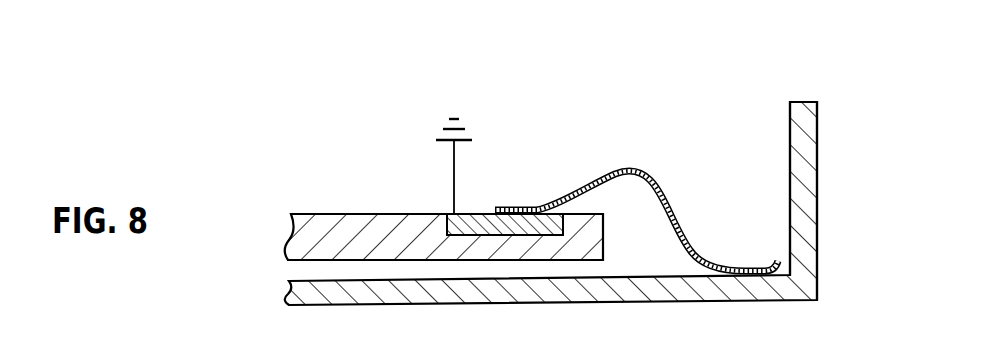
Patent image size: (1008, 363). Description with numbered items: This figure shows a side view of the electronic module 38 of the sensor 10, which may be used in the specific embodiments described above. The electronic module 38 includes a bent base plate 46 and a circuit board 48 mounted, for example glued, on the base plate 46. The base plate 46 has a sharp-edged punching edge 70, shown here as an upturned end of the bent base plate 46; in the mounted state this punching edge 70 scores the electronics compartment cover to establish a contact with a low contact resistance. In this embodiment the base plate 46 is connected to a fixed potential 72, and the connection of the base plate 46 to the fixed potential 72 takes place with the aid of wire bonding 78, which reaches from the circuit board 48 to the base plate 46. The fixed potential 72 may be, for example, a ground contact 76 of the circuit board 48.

The sensor 10 is at (814, 78).
The electronic module 38 is at (305, 199).
The base plate 46 is at (669, 287).
The circuit board 48 is at (349, 233).
The punching edge 70 is at (802, 194).
The fixed potential 72 is at (445, 127).
The ground contact 76 is at (500, 236).
The wire bonding 78 is at (637, 170).